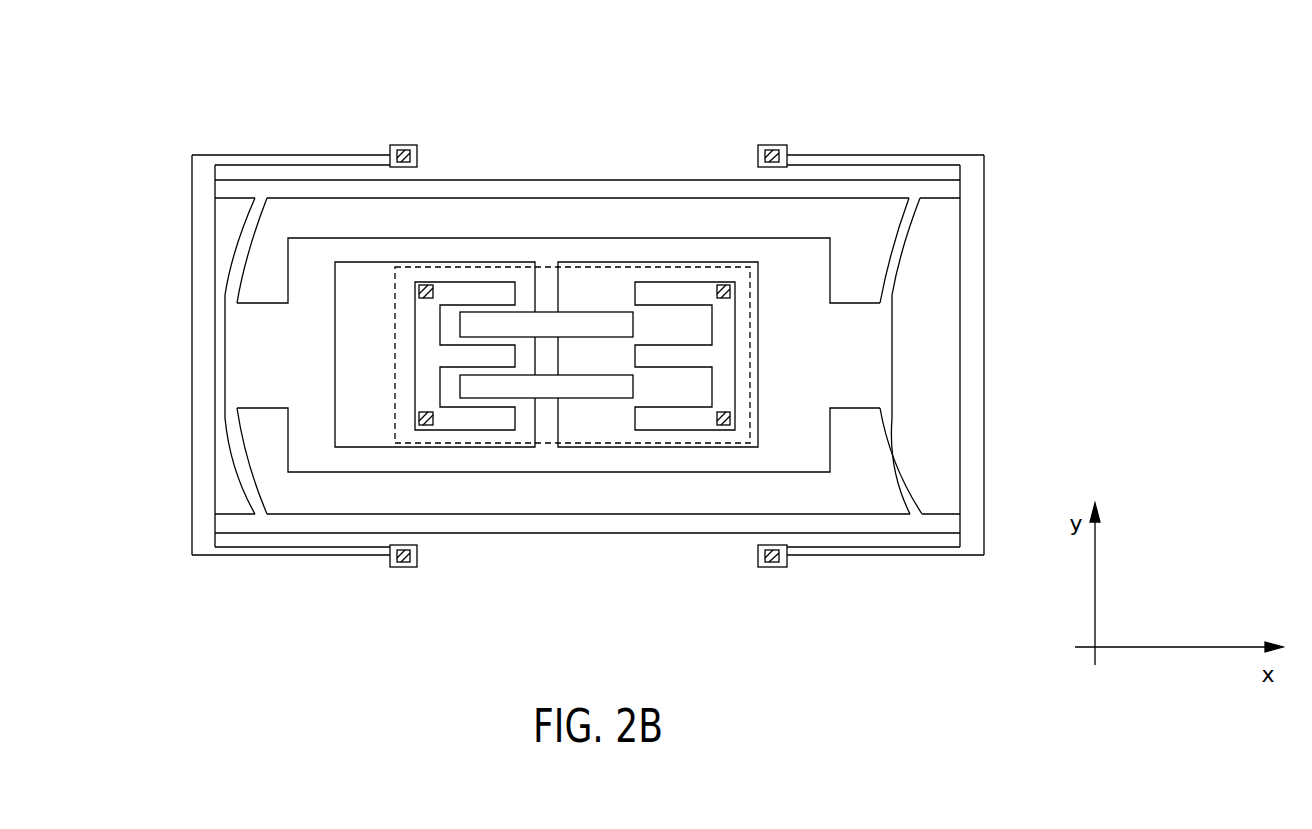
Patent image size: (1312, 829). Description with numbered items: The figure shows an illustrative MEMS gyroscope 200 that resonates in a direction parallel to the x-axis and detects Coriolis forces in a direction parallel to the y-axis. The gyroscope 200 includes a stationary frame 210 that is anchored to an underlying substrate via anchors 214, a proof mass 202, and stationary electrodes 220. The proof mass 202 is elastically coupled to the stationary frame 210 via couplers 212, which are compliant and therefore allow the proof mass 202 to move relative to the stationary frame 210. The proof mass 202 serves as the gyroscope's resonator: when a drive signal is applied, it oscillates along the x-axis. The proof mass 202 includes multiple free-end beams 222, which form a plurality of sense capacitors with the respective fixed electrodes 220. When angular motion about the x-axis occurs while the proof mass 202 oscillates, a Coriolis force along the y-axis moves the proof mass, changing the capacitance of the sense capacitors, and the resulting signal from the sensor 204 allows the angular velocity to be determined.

The gyroscope 200 is at (652, 316).
The proof mass 202 is at (318, 303).
The sensor 204 is at (620, 262).
The stationary frame 210 is at (973, 195).
The couplers 212 is at (238, 447).
The anchors 214 is at (772, 145).
The stationary electrodes 220 is at (682, 292).
The free-end beams 222 is at (602, 325).